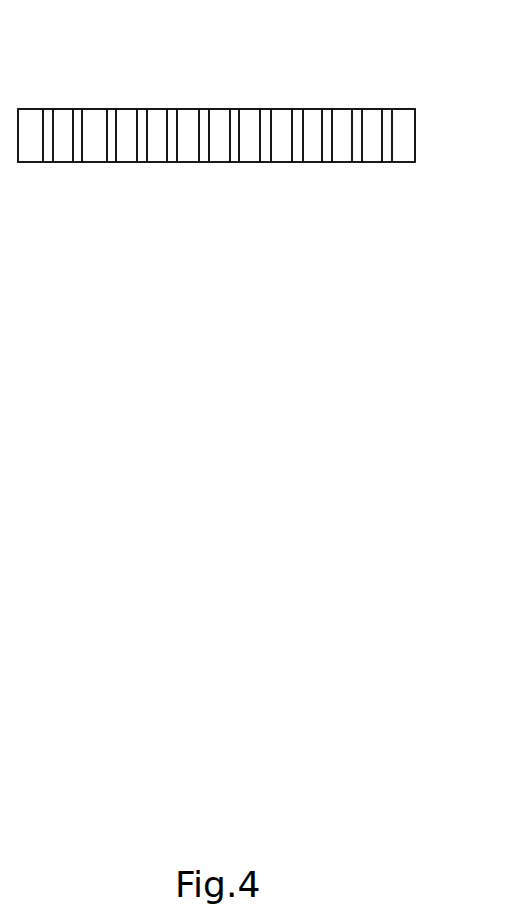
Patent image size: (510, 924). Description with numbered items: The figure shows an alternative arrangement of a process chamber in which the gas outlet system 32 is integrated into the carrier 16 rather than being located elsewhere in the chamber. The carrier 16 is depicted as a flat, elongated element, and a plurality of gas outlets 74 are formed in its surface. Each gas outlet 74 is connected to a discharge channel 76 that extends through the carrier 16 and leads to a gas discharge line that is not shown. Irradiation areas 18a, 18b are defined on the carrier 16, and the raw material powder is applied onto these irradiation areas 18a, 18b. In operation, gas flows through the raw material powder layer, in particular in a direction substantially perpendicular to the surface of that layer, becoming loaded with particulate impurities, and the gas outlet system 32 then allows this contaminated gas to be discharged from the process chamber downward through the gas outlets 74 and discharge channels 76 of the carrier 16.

The carrier 16 is at (415, 118).
The irradiation area 18a is at (65, 108).
The irradiation area 18b is at (370, 108).
The gas outlet system 32 is at (279, 76).
The gas outlet 74 is at (201, 108).
The discharge channel 76 is at (205, 163).